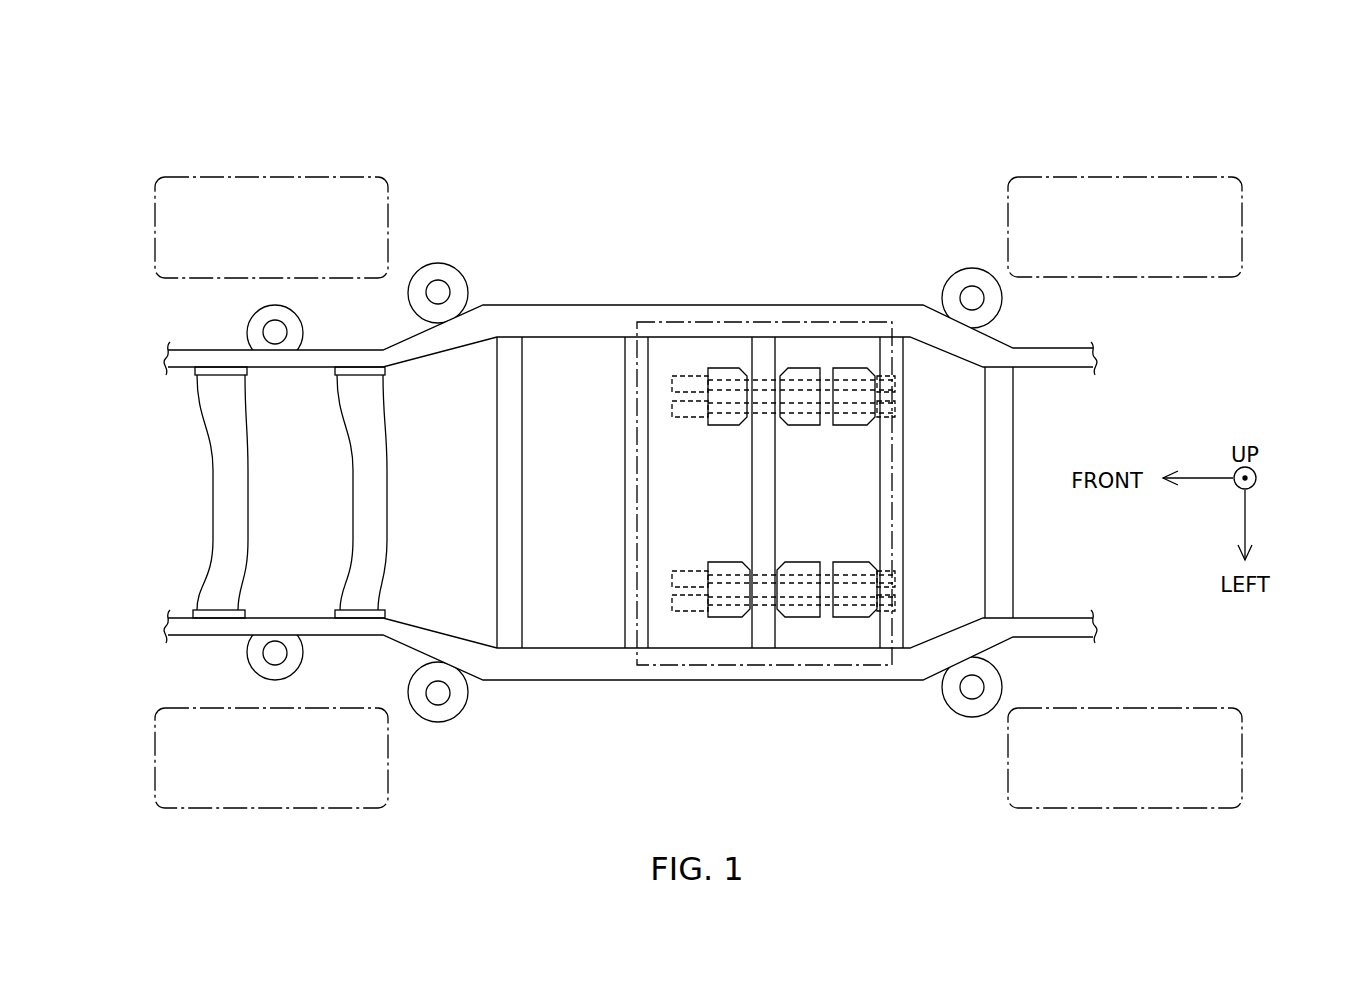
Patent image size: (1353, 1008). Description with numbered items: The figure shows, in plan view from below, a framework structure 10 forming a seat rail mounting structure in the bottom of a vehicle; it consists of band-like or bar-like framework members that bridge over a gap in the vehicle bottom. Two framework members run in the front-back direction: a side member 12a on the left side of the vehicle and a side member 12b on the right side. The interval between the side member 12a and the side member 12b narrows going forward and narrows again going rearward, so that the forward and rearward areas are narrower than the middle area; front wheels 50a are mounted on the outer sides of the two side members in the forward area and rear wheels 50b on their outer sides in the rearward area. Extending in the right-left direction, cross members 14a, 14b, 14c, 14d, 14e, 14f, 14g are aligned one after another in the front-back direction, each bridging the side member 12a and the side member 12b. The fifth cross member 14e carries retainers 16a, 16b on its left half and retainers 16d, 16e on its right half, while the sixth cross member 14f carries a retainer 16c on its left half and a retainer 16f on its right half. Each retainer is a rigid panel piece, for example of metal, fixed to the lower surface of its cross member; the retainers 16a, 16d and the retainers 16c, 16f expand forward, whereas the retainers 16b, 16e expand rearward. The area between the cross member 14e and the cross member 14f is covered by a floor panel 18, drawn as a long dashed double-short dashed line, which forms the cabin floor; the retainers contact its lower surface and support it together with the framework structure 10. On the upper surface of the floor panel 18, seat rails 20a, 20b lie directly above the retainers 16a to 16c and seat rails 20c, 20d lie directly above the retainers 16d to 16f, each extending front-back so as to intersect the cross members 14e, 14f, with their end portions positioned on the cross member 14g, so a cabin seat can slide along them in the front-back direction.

The framework structure 10 is at (540, 140).
The side member 12a is at (568, 670).
The side member 12b is at (567, 317).
The cross member 14a is at (229, 487).
The cross member 14b is at (367, 487).
The cross member 14c is at (510, 492).
The cross member 14d is at (630, 466).
The cross member 14e is at (752, 495).
The cross member 14f is at (905, 471).
The cross member 14g is at (1007, 477).
The retainer 16a is at (725, 562).
The retainer 16b is at (796, 562).
The retainer 16c is at (855, 562).
The retainer 16d is at (727, 426).
The retainer 16e is at (800, 426).
The retainer 16f is at (850, 426).
The floor panel 18 is at (788, 322).
The seat rail 20a is at (673, 606).
The seat rail 20b is at (676, 573).
The seat rail 20c is at (677, 417).
The seat rail 20d is at (672, 387).
The front wheel 50a is at (247, 177).
The rear wheel 50b is at (1140, 177).